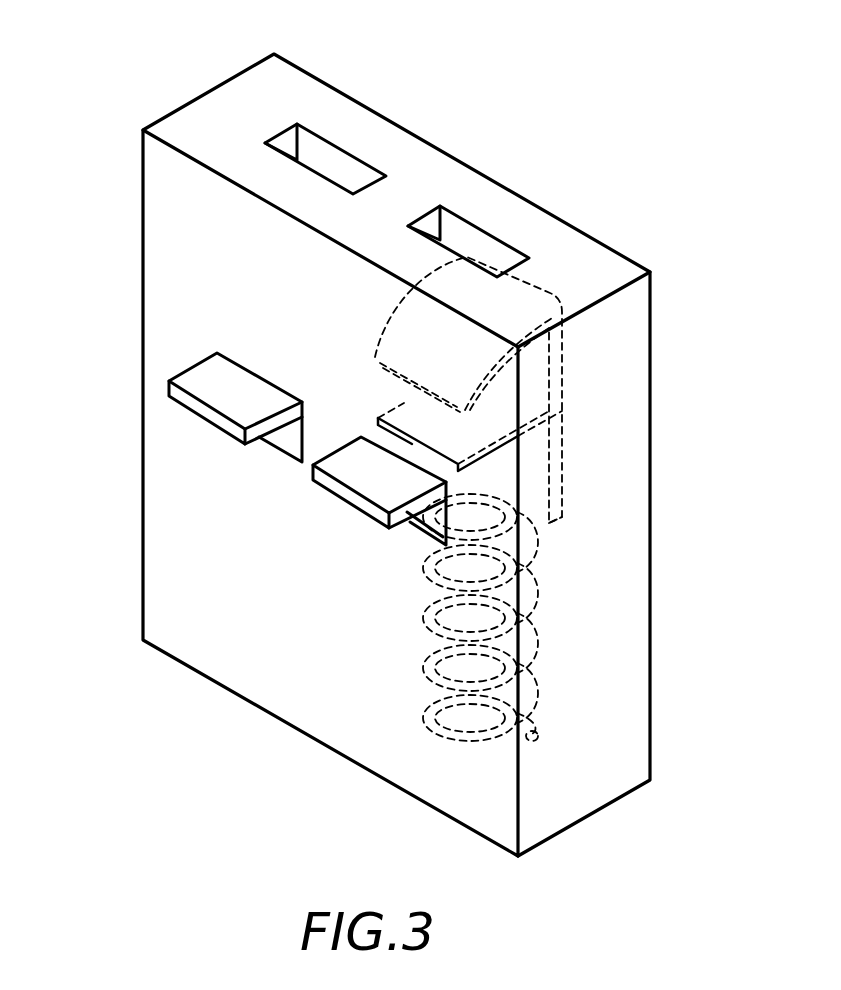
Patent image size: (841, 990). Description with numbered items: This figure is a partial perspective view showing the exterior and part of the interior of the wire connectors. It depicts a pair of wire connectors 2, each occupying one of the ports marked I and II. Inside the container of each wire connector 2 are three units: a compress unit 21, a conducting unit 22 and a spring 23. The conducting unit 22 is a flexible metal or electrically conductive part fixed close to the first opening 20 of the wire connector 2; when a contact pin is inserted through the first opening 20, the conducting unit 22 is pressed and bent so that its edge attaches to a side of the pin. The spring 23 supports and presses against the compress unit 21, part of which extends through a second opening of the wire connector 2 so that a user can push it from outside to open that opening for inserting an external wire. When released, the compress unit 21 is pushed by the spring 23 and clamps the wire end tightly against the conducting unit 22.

The wire connector 2 is at (230, 112).
The first opening 20 is at (332, 165).
The compress unit 21 is at (208, 375).
The conducting unit 22 is at (556, 353).
The spring 23 is at (537, 593).